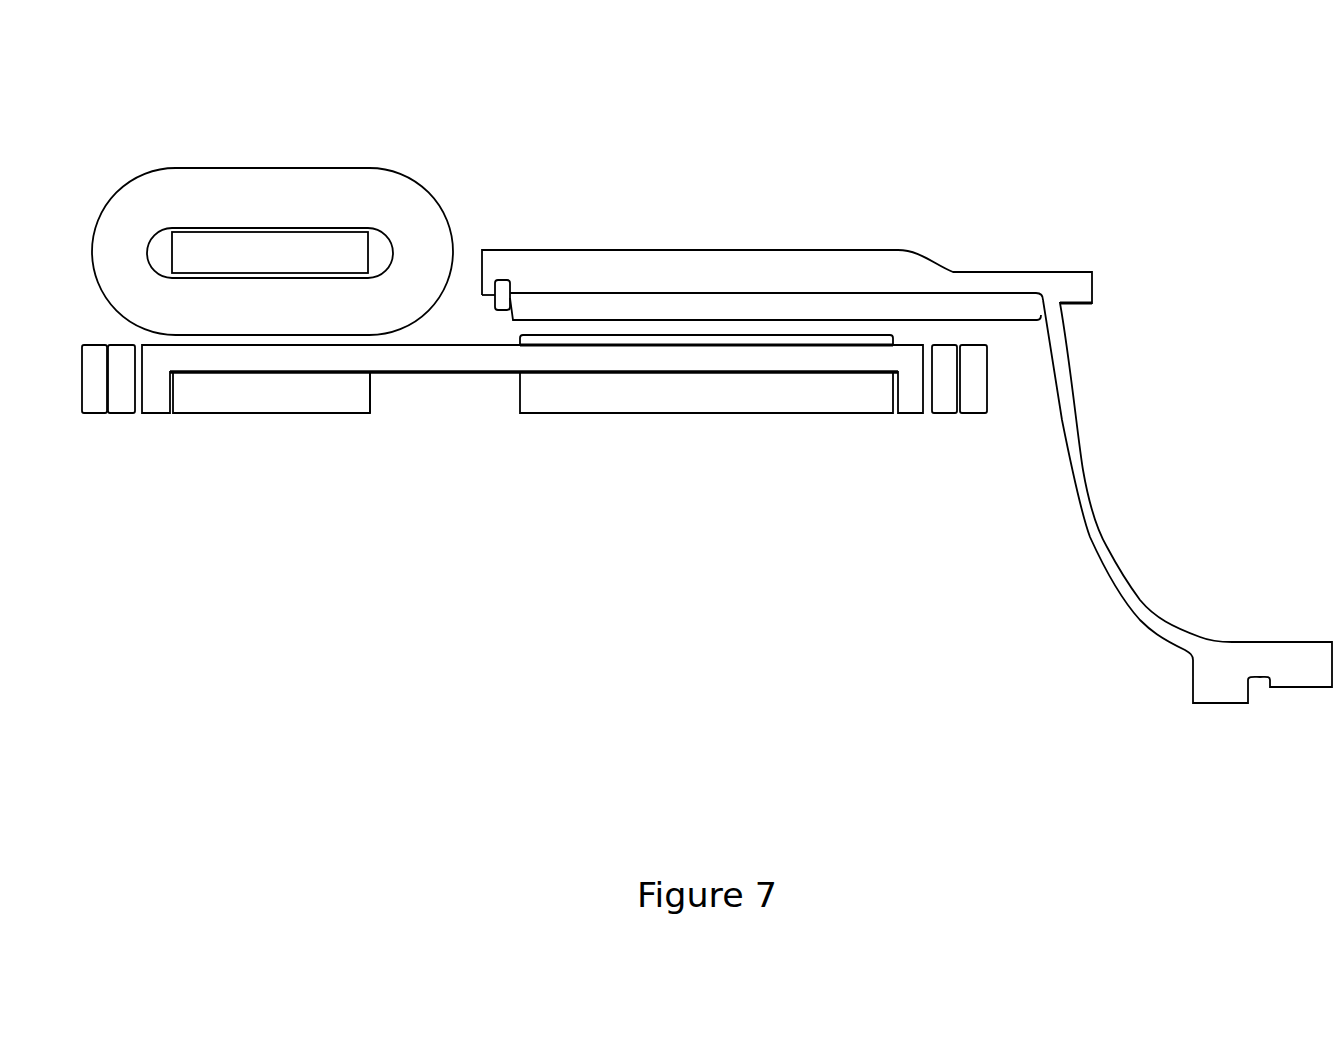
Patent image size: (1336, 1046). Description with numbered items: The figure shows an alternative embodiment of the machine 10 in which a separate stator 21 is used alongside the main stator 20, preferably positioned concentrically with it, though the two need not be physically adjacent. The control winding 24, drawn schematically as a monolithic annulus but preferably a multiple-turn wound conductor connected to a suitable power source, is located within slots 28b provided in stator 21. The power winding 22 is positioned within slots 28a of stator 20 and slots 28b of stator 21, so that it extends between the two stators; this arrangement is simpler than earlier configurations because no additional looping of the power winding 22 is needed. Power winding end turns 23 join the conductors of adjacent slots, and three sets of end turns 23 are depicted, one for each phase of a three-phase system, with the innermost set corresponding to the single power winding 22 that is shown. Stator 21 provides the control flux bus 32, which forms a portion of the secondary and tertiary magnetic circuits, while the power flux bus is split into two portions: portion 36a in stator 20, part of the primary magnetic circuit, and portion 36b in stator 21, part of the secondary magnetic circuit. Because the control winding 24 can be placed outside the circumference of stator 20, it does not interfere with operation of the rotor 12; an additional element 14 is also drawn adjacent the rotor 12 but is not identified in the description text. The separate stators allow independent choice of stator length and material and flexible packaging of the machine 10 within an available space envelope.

The machine 10 is at (1176, 157).
The rotor 12 is at (692, 260).
The plate 14 is at (932, 298).
The stator 20 is at (720, 403).
The stator 21 is at (362, 403).
The power winding 22 is at (427, 367).
The power winding end turns 23 is at (98, 408).
The control winding 24 is at (228, 188).
The slots 28a is at (800, 378).
The slots 28b is at (230, 380).
The control flux bus 32 is at (333, 245).
The power flux bus portion 36a is at (602, 403).
The power flux bus portion 36b is at (307, 403).